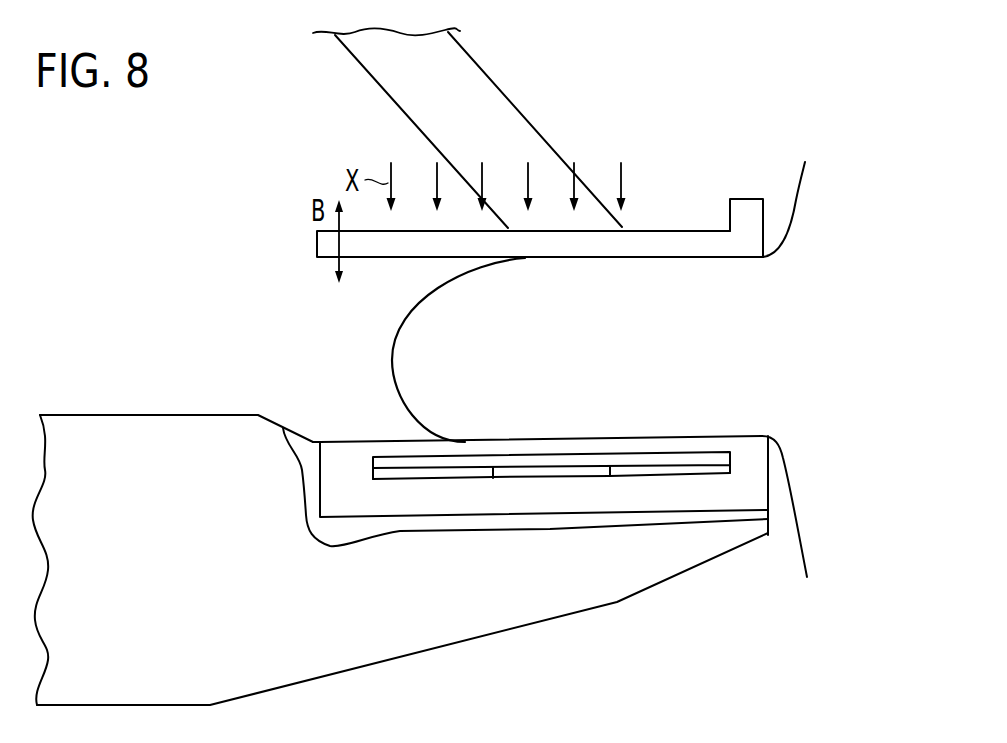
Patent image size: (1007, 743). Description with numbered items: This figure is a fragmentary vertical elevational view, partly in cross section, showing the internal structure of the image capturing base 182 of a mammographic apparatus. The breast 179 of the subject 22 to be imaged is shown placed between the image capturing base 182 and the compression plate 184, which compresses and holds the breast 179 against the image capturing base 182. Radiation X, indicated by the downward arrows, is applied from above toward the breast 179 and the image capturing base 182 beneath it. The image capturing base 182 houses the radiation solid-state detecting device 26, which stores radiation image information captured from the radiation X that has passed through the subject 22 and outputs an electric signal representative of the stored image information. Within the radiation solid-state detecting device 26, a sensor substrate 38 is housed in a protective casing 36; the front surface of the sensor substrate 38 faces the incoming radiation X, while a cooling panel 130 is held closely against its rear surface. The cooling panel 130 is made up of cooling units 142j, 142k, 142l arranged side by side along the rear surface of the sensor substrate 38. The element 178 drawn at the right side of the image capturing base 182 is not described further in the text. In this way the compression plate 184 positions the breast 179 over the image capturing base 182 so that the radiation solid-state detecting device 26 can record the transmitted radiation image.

The subject 22 is at (421, 350).
The breast 179 is at (421, 350).
The radiation solid-state detecting device 26 is at (537, 412).
The protective casing 36 is at (544, 510).
The sensor substrate 38 is at (551, 434).
The cooling panel 130 is at (458, 539).
The cooling unit 142j is at (670, 522).
The cooling unit 142k is at (551, 524).
The cooling unit 142l is at (433, 525).
The holder 178 is at (830, 506).
The image capturing base 182 is at (402, 619).
The compression plate 184 is at (745, 199).